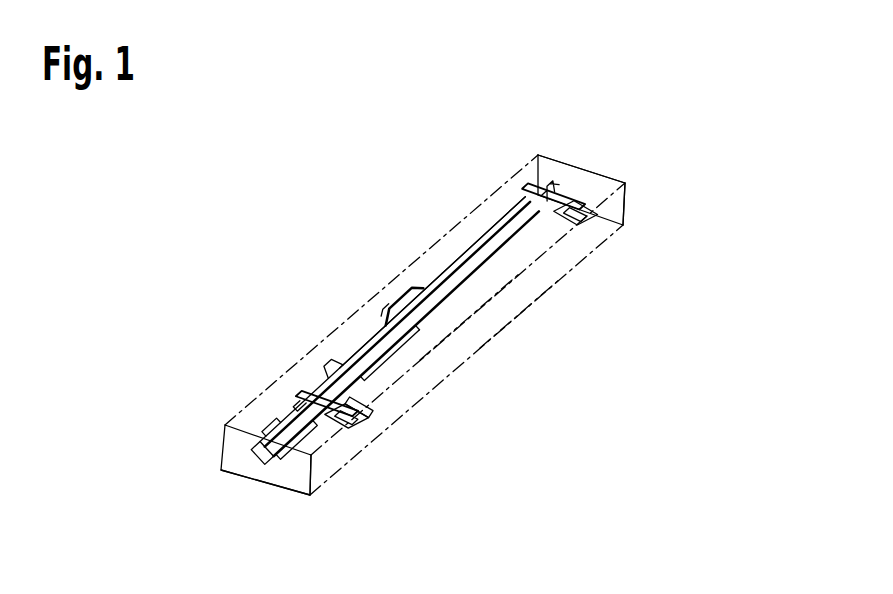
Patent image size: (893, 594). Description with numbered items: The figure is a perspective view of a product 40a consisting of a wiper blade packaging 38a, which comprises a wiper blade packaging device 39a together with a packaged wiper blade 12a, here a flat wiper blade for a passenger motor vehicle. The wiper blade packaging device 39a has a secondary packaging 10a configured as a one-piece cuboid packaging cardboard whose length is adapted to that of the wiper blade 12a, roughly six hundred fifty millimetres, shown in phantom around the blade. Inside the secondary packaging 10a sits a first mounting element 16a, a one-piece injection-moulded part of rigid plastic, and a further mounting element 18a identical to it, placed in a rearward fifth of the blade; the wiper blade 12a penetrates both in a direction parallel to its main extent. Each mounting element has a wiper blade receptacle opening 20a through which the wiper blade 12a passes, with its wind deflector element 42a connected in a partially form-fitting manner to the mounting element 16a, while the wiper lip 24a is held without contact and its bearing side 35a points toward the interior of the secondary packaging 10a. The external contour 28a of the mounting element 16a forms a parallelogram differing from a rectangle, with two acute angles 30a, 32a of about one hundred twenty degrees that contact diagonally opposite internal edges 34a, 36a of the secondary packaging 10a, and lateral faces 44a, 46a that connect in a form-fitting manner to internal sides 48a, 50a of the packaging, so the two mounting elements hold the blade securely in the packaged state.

The secondary packaging 10a is at (612, 233).
The wiper blade 12a is at (441, 280).
The first mounting element 16a is at (328, 432).
The further mounting element 18a is at (545, 246).
The wiper blade receptacle opening 20a is at (288, 416).
The wiper lip 24a is at (386, 357).
The external contour 28a is at (277, 420).
The acute angle 30a is at (371, 423).
The acute angle 32a is at (283, 432).
The internal edge 34a is at (483, 308).
The bearing side 35a is at (400, 348).
The internal edge 36a is at (358, 349).
The wiper blade packaging 38a is at (546, 312).
The wiper blade packaging device 39a is at (642, 182).
The product 40a is at (318, 218).
The wind deflector element 42a is at (327, 365).
The lateral face 44a is at (352, 400).
The lateral face 46a is at (286, 468).
The internal side 48a is at (556, 183).
The internal side 50a is at (477, 242).